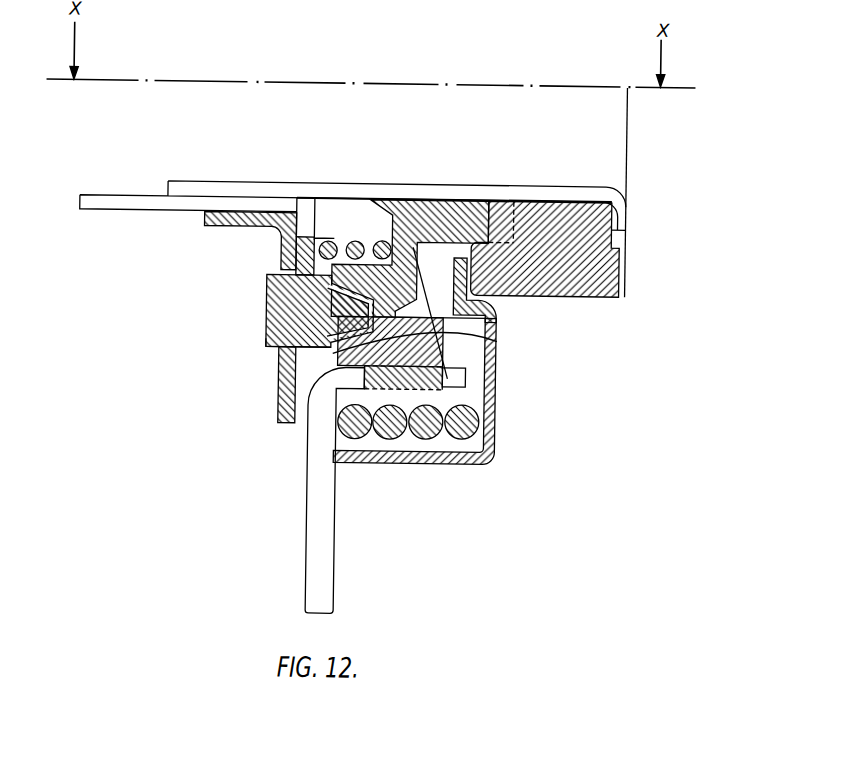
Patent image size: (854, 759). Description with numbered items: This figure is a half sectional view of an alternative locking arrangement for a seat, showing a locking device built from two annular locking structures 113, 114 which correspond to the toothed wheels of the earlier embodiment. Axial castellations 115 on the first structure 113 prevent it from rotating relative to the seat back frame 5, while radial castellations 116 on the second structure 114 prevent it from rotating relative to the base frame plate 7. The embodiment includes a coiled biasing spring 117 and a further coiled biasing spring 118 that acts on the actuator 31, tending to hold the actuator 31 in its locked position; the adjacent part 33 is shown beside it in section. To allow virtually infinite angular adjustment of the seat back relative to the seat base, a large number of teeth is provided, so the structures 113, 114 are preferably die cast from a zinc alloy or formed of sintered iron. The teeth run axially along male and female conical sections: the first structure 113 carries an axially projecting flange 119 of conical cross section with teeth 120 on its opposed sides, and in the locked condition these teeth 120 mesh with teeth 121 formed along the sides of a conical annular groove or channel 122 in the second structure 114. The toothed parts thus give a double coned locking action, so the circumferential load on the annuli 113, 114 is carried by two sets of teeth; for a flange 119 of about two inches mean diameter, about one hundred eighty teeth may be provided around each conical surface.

The seat back frame 5 is at (260, 227).
The base frame plate 7 is at (331, 505).
The actuator 31 is at (552, 218).
The bearing body 33 is at (468, 206).
The annular locking structure 113 is at (270, 336).
The annular locking structure 114 is at (495, 336).
The axial castellations 115 is at (272, 311).
The radial castellations 116 is at (440, 374).
The coiled biasing spring 117 is at (334, 238).
The coiled biasing spring 118 is at (473, 411).
The axially projecting flange 119 is at (272, 349).
The teeth 120 is at (301, 281).
The teeth 121 is at (345, 346).
The annular groove 122 is at (495, 308).